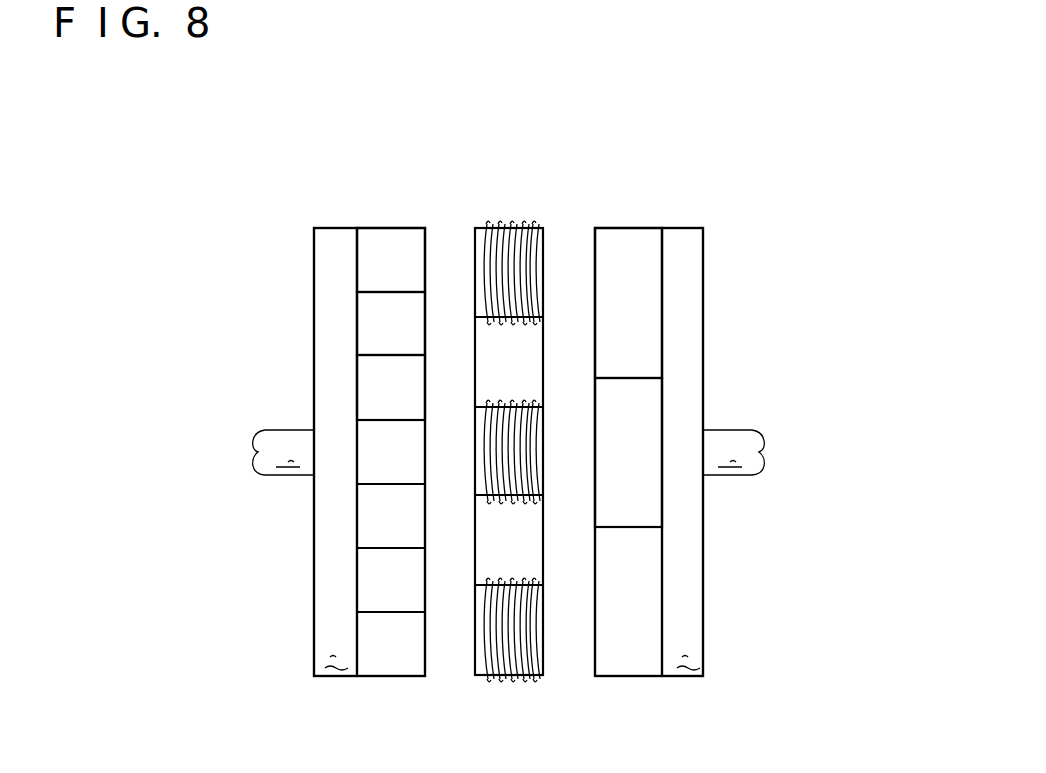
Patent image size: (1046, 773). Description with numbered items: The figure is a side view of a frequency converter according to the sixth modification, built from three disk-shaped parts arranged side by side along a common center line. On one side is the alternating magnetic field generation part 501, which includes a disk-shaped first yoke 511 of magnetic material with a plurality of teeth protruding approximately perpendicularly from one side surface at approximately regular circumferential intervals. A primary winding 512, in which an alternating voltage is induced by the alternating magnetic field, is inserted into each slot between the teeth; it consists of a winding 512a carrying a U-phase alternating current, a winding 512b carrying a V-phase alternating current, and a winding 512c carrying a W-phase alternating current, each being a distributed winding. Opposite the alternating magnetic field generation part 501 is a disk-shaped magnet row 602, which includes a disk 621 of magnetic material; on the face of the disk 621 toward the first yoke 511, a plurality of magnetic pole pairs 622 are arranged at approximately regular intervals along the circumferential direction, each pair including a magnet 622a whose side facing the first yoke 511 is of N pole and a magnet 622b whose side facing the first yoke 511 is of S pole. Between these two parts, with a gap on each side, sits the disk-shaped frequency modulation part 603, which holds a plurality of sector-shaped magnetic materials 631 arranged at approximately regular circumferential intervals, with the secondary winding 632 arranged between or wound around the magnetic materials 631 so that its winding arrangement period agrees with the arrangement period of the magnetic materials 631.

The alternating magnetic field generation part 501 is at (373, 206).
The first yoke 511 is at (325, 255).
The primary winding 512 is at (168, 255).
The winding 512a is at (365, 272).
The winding 512b is at (365, 328).
The winding 512c is at (365, 388).
The frequency modulation part 603 is at (498, 213).
The magnetic material 631 is at (535, 228).
The secondary winding 632 is at (490, 255).
The magnet row 602 is at (630, 209).
The disk 621 is at (690, 257).
The magnetic pole pair 622 is at (827, 278).
The magnet 622a is at (648, 308).
The magnet 622b is at (648, 415).